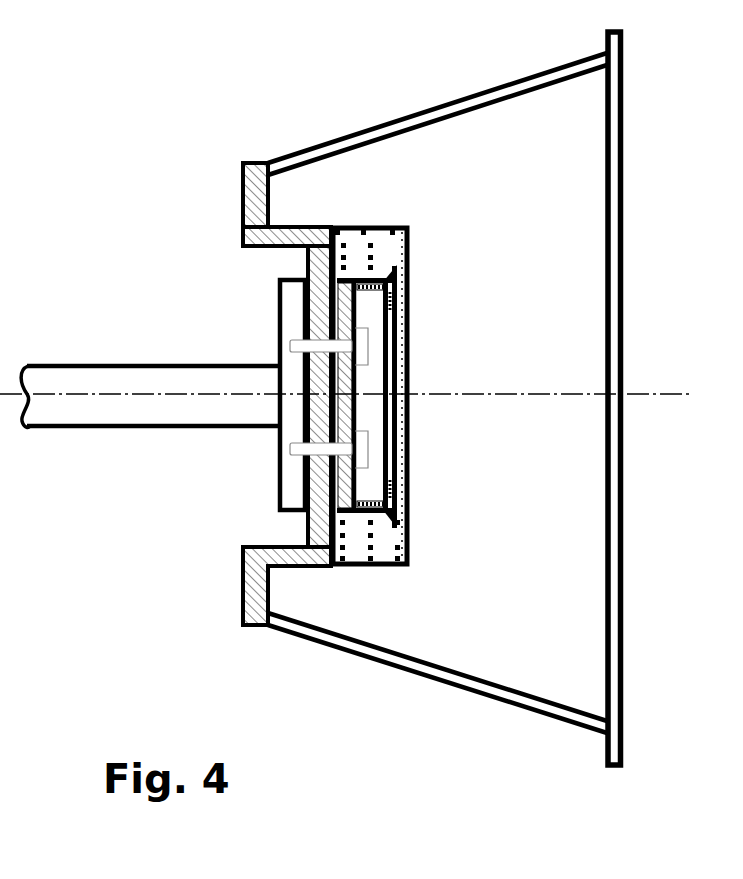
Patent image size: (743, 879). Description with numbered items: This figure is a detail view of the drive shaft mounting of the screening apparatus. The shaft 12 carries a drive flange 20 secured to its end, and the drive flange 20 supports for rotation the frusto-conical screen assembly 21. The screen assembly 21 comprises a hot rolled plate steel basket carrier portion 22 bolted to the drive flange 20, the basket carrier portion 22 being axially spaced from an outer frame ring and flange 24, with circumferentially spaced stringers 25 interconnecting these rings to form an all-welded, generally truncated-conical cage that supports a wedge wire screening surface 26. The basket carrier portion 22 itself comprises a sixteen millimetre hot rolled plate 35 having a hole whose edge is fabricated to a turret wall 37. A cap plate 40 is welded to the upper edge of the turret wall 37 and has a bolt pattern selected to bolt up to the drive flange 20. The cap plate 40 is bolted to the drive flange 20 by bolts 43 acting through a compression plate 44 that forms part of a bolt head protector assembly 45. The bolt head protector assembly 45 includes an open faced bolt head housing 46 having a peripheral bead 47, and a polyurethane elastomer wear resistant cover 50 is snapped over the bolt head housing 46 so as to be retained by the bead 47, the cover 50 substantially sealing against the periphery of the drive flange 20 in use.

The shaft 12 is at (87, 383).
The drive flange 20 is at (285, 483).
The frusto-conical screen assembly 21 is at (388, 703).
The basket carrier portion 22 is at (292, 203).
The outer frame ring and flange 24 is at (623, 60).
The stringers 25 is at (513, 697).
The wedge wire screening surface 26 is at (425, 660).
The hot rolled plate 35 is at (253, 196).
The turret wall 37 is at (270, 238).
The cap plate 40 is at (318, 526).
The bolts 43 is at (400, 336).
The compression plate 44 is at (400, 308).
The bolt head protector assembly 45 is at (428, 380).
The bolt head housing 46 is at (400, 418).
The peripheral bead 47 is at (400, 513).
The wear resistant cover 50 is at (400, 243).